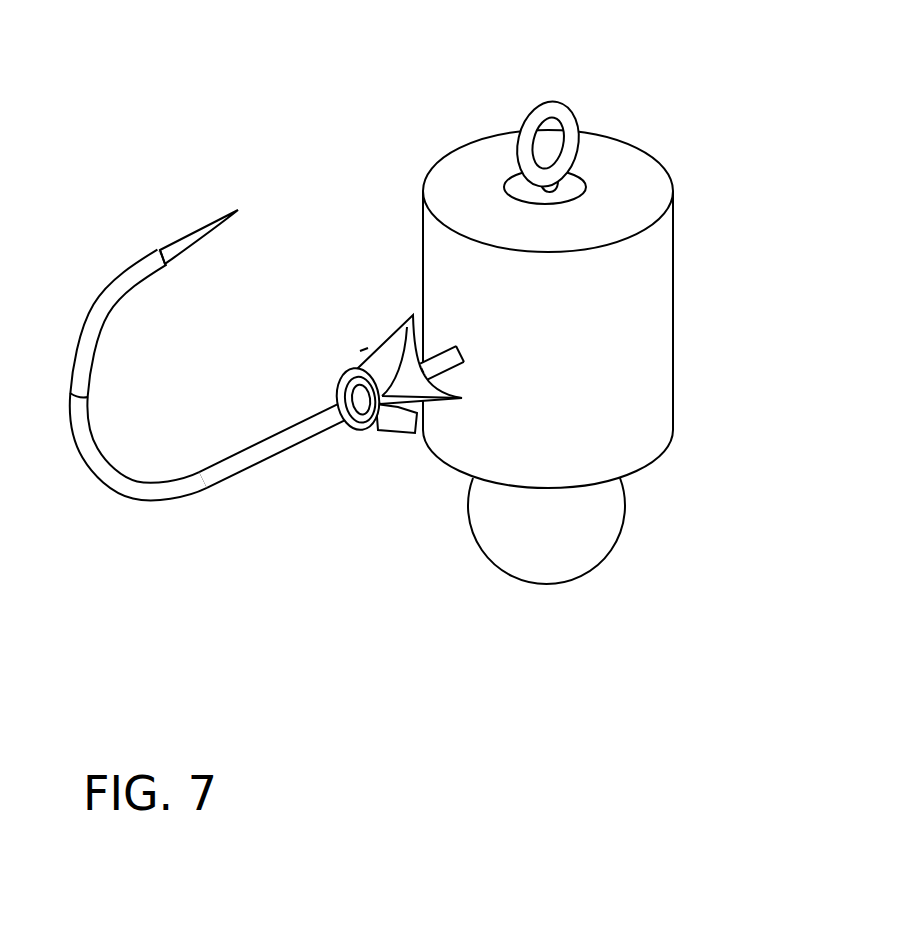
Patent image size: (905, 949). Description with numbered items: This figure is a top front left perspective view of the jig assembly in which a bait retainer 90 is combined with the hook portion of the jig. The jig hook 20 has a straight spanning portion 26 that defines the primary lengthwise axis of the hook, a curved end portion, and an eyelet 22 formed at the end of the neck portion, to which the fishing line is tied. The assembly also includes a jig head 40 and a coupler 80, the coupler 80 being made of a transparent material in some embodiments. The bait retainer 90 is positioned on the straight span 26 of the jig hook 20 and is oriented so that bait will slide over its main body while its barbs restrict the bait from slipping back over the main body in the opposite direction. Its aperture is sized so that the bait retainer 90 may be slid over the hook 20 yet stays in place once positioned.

The jig hook 20 is at (177, 238).
The eyelet 22 is at (558, 110).
The straight spanning portion 26 is at (290, 437).
The jig head 40 is at (565, 550).
The coupler 80 is at (642, 355).
The bait retainer 90 is at (397, 408).